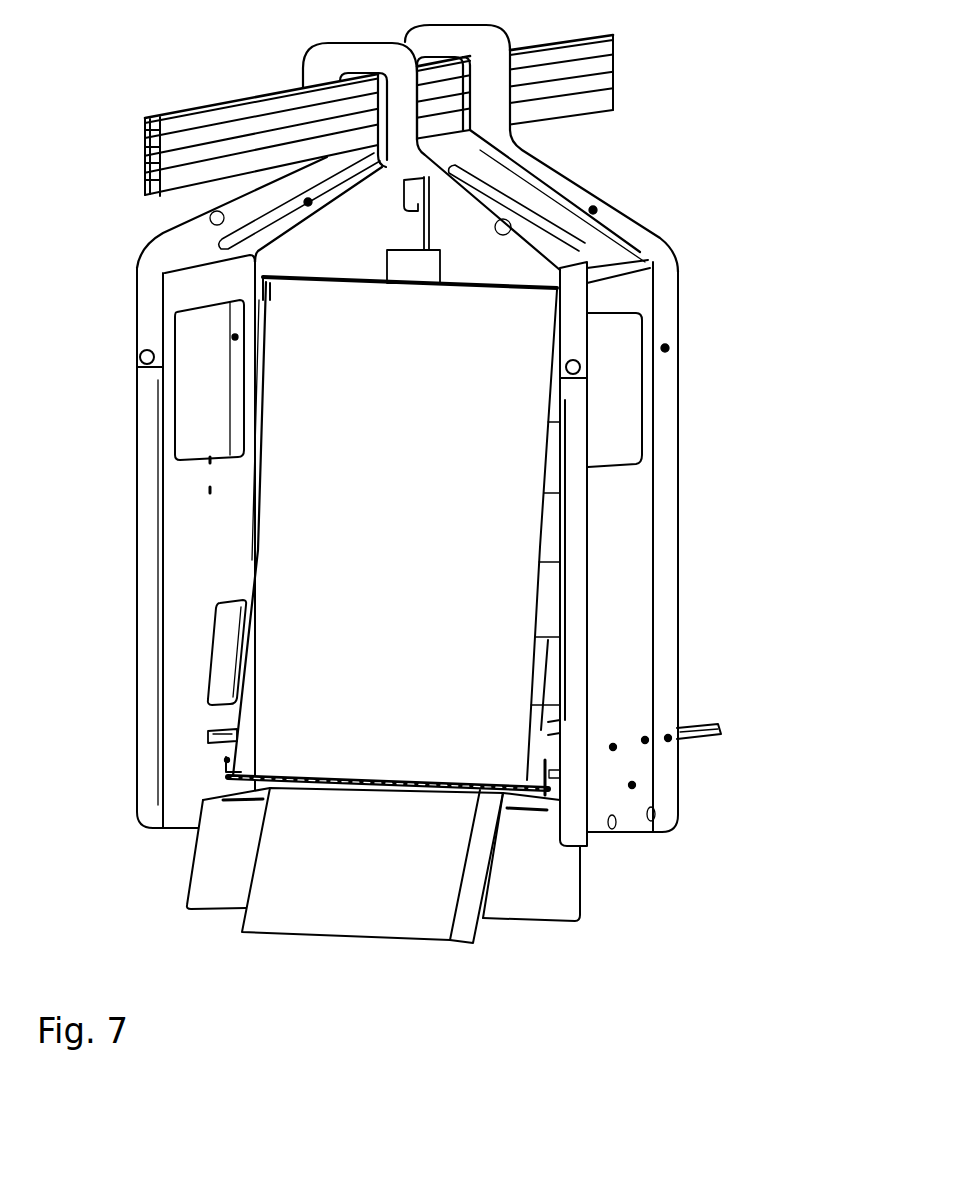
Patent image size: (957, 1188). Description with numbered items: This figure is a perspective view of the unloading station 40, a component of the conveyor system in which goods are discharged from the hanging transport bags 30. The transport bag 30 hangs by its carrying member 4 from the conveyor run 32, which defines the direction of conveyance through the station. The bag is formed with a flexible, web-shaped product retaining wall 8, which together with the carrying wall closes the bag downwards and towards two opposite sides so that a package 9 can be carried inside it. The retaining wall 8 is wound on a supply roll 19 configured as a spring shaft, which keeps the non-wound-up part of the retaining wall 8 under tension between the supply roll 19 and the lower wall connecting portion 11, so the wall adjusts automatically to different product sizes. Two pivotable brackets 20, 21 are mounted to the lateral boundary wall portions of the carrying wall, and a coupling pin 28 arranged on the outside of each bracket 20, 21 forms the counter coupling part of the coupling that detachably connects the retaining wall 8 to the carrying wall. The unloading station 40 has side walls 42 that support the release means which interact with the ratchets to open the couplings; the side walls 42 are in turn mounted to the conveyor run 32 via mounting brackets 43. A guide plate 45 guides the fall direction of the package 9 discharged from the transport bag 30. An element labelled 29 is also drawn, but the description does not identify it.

The carrying member 4 is at (432, 227).
The product retaining wall 8 is at (275, 592).
The package 9 is at (348, 907).
The lower wall connecting portion 11 is at (555, 784).
The supply roll 19 is at (240, 788).
The pivotable bracket 20 is at (220, 714).
The pivotable bracket 21 is at (553, 730).
The coupling pin 28 is at (223, 760).
The side flaps 29 is at (217, 673).
The transport bag 30 is at (516, 548).
The conveyor run 32 is at (590, 78).
The unloading station 40 is at (722, 318).
The side wall 42 is at (183, 537).
The mounting bracket 43 is at (577, 192).
The guide plate 45 is at (533, 907).